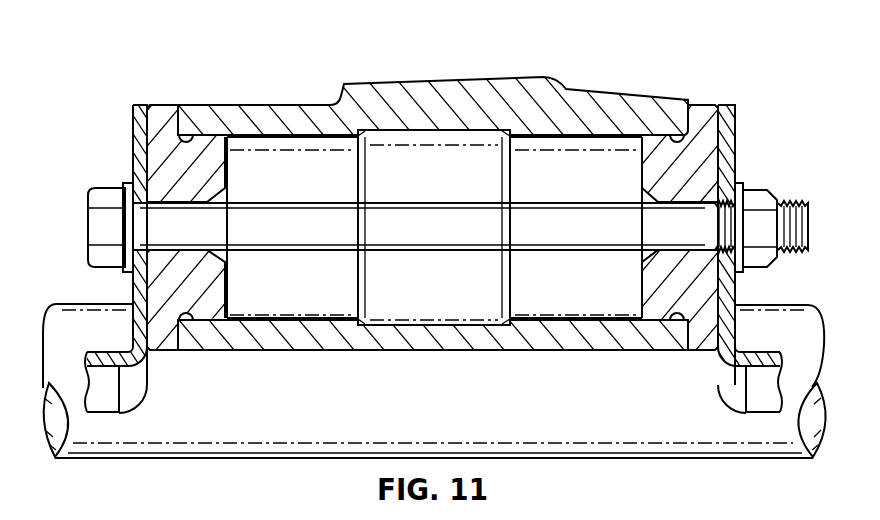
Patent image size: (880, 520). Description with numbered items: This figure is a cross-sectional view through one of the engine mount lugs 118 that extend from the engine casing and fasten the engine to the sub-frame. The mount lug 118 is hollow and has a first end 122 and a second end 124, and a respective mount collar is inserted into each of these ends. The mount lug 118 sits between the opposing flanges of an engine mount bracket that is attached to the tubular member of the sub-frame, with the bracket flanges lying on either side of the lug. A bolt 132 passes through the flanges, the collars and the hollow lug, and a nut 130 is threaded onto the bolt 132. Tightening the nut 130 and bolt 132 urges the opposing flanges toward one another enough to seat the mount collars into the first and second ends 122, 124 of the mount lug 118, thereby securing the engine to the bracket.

The mount lug 118 is at (447, 79).
The first end 122 is at (677, 78).
The second end 124 is at (195, 80).
The nut 130 is at (763, 188).
The bolt 132 is at (104, 186).